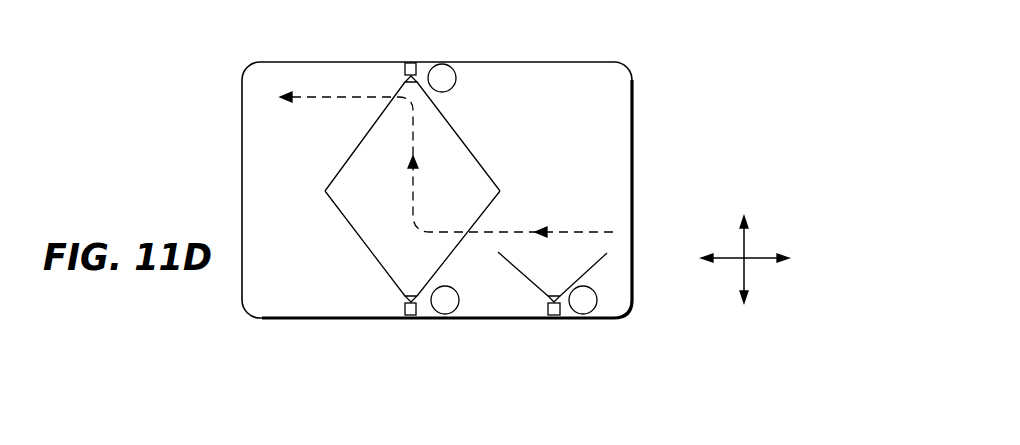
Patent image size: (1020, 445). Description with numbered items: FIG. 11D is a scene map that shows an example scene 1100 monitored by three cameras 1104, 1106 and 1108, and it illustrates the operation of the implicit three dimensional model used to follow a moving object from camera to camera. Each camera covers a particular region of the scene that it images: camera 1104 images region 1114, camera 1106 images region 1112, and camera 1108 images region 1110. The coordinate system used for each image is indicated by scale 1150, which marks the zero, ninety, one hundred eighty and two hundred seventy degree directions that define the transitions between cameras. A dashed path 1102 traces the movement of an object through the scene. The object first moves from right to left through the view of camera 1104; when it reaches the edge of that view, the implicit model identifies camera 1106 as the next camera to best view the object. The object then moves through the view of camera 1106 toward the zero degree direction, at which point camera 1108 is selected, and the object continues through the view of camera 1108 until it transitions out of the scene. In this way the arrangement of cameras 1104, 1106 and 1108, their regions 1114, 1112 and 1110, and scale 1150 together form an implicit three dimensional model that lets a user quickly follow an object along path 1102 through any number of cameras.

The scene / monitored area 1100 is at (630, 75).
The path 1102 is at (567, 223).
The camera 1104 is at (555, 316).
The camera 1106 is at (412, 318).
The camera 1108 is at (412, 62).
The region 1110 is at (432, 117).
The region 1112 is at (383, 243).
The region 1114 is at (547, 277).
The scale 1150 is at (730, 267).